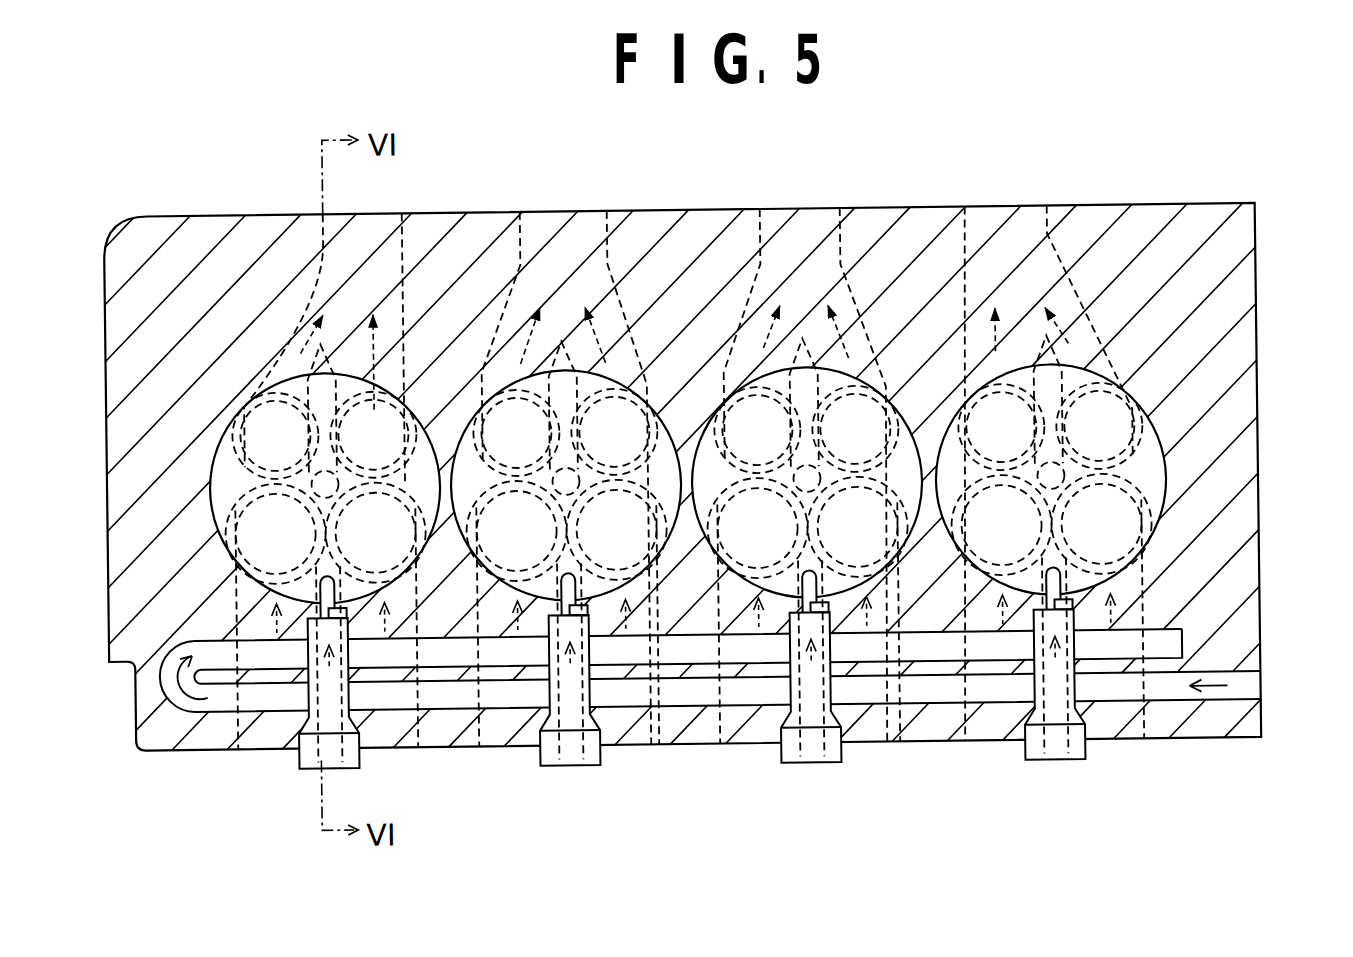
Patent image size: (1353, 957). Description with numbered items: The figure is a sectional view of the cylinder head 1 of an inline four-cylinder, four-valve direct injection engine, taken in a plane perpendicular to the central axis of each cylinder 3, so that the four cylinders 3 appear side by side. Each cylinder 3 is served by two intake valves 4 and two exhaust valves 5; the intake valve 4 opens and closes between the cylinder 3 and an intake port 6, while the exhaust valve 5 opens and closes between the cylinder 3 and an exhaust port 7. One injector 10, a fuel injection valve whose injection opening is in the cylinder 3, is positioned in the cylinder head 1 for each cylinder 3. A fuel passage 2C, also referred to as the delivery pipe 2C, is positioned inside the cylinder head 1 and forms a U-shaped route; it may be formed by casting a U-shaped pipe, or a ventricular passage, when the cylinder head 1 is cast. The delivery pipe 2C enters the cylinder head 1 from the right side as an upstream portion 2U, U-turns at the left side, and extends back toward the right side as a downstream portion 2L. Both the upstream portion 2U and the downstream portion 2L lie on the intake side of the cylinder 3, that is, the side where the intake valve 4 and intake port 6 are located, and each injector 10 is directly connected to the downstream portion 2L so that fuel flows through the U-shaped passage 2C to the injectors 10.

The cylinder head 1 is at (1246, 239).
The fuel passage 2C is at (711, 768).
The downstream portion 2L is at (634, 651).
The upstream portion 2U is at (699, 695).
The cylinder 3 is at (1156, 479).
The intake valve 4 is at (1122, 537).
The exhaust valve 5 is at (1122, 422).
The intake port 6 is at (1161, 808).
The exhaust port 7 is at (1015, 236).
The injector 10 is at (1054, 753).